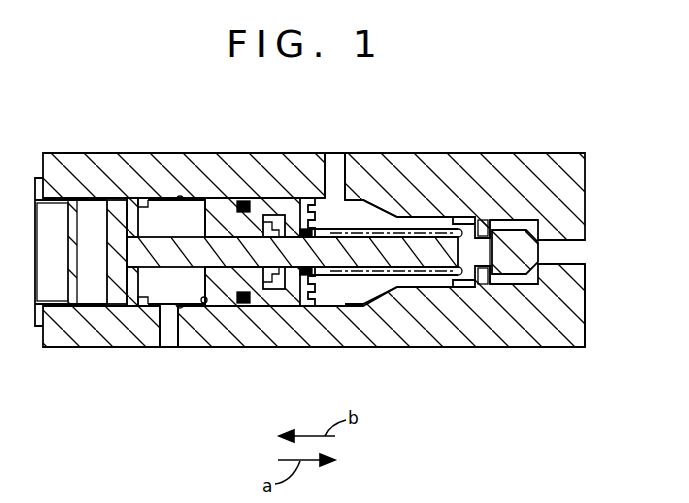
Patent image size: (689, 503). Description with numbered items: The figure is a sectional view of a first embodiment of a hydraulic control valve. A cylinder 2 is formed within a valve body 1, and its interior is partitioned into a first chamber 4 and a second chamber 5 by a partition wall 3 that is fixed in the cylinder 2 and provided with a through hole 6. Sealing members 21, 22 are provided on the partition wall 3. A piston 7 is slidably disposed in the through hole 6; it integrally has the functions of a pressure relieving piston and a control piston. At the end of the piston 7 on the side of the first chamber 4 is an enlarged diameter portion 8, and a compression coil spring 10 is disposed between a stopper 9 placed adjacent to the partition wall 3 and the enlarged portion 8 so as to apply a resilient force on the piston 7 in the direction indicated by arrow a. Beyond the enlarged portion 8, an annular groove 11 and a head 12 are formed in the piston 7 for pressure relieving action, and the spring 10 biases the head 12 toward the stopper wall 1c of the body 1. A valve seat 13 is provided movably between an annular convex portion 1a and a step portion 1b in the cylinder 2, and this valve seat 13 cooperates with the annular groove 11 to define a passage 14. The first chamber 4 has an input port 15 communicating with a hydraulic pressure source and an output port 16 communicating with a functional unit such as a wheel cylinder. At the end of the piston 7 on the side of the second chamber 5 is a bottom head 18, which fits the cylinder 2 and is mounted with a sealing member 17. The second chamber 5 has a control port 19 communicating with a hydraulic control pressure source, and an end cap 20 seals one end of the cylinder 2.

The valve body 1 is at (520, 168).
The annular convex portion 1a is at (452, 300).
The step portion 1b is at (498, 296).
The stopper wall 1c is at (560, 330).
The cylinder 2 is at (180, 200).
The partition wall 3 is at (262, 205).
The first chamber 4 is at (362, 210).
The second chamber 5 is at (156, 212).
The through hole 6 is at (205, 303).
The piston 7 is at (255, 268).
The enlarged diameter portion 8 is at (482, 286).
The stopper 9 is at (305, 270).
The compression coil spring 10 is at (346, 277).
The annular groove 11 is at (497, 286).
The head 12 is at (528, 264).
The valve seat 13 is at (483, 221).
The passage 14 is at (470, 220).
The input port 15 is at (334, 160).
The output port 16 is at (578, 249).
The sealing member 17 is at (133, 203).
The bottom head 18 is at (115, 200).
The control port 19 is at (170, 332).
The end cap 20 is at (53, 197).
The sealing member 21 is at (243, 204).
The sealing member 22 is at (272, 225).